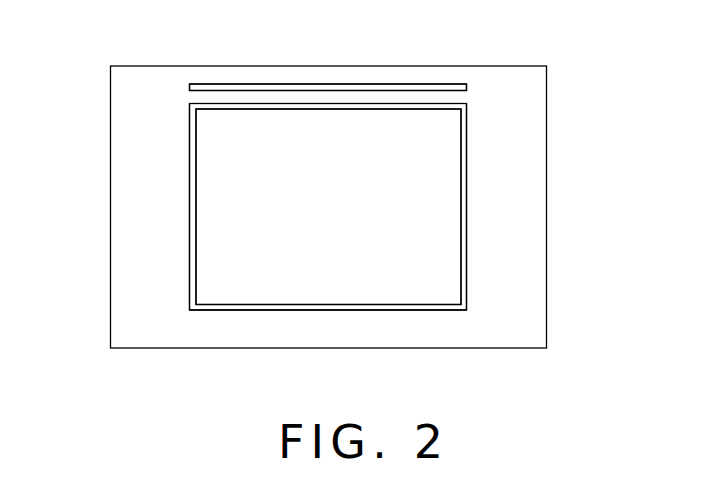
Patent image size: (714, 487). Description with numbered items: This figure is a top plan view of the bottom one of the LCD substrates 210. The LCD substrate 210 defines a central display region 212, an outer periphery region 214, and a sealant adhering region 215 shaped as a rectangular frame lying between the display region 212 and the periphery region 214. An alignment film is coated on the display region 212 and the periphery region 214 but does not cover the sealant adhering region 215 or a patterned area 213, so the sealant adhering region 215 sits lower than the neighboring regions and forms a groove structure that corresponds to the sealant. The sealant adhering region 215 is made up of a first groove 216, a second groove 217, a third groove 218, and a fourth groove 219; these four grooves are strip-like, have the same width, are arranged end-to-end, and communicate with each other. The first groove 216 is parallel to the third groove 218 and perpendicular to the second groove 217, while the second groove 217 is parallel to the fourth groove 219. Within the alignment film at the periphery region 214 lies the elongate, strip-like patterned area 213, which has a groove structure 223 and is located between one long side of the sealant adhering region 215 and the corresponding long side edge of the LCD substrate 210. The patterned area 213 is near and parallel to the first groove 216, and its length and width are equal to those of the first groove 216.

The LCD substrate 210 is at (350, 49).
The display region 212 is at (347, 275).
The patterned area 213 is at (455, 79).
The periphery region 214 is at (142, 208).
The sealant adhering region 215 is at (470, 270).
The first groove 216 is at (417, 105).
The second groove 217 is at (463, 237).
The third groove 218 is at (433, 307).
The fourth groove 219 is at (193, 142).
The groove structure 223 is at (406, 86).